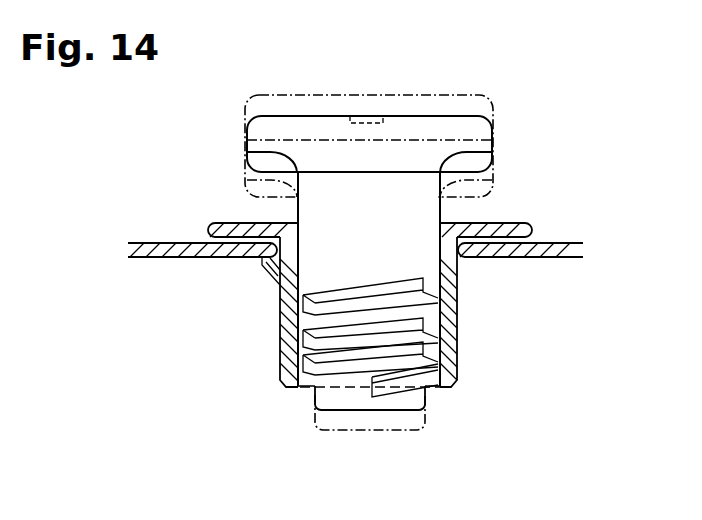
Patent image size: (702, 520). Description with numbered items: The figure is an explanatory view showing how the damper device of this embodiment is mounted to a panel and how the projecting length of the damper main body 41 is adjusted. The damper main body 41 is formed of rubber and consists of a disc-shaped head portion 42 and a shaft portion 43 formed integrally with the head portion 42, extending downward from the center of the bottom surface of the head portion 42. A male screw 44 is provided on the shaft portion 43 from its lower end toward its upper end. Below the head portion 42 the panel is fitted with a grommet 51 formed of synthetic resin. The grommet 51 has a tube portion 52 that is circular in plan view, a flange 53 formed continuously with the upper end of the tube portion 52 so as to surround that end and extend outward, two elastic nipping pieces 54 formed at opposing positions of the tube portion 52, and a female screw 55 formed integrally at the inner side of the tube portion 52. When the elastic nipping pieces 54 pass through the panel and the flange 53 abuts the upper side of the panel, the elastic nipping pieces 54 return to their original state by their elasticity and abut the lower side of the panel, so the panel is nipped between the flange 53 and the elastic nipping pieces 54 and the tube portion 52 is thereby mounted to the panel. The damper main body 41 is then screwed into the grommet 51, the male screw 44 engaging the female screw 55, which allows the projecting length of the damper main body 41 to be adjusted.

The damper main body 41 is at (243, 134).
The head portion 42 is at (472, 157).
The shaft portion 43 is at (386, 210).
The male screw 44 is at (343, 320).
The grommet 51 is at (460, 383).
The tube portion 52 is at (458, 372).
The flange 53 is at (527, 232).
The elastic nipping pieces 54 is at (268, 259).
The female screw 55 is at (300, 352).